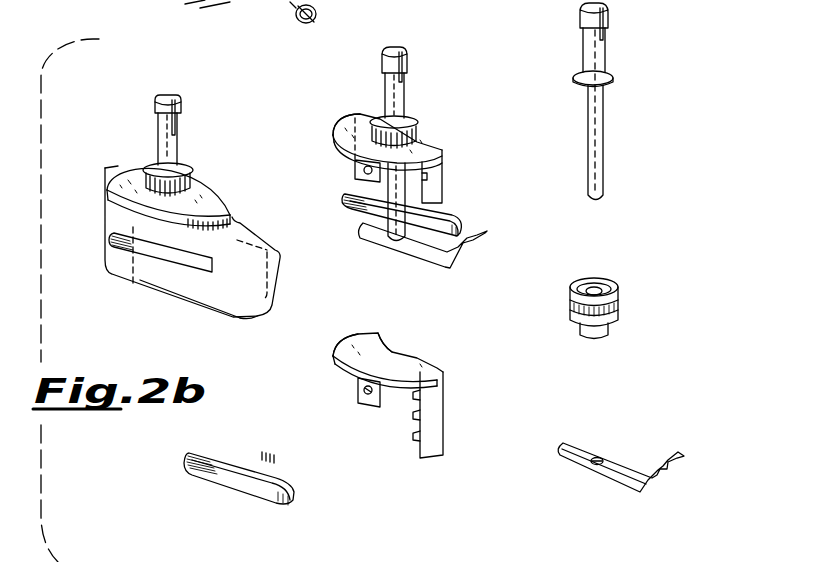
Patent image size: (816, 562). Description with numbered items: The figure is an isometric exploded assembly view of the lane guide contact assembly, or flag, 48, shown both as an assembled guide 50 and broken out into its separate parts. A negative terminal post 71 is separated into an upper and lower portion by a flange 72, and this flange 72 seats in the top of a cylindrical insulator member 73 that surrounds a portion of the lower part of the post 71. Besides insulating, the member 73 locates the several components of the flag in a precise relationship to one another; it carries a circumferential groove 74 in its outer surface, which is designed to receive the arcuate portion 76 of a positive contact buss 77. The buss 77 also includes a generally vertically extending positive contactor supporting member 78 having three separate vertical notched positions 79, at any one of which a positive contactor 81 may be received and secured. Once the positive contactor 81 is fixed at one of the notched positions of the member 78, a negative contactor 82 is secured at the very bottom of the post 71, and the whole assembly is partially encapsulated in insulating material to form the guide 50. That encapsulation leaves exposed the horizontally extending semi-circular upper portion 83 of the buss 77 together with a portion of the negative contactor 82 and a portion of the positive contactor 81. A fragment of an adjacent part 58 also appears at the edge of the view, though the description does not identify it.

The lane guide contact assembly 48 is at (247, 315).
The guide 50 is at (248, 300).
The mounting part 58 is at (183, 4).
The negative terminal post 71 is at (187, 135).
The flange 72 is at (197, 166).
The cylindrical insulator member 73 is at (201, 180).
The circumferential groove 74 is at (621, 306).
The arcuate portion 76 is at (395, 355).
The positive contact buss 77 is at (336, 142).
The positive contactor supporting member 78 is at (449, 172).
The vertical notched positions 79 is at (415, 395).
The positive contactor 81 is at (162, 259).
The negative contactor 82 is at (205, 311).
The semi-circular upper portion 83 is at (133, 176).